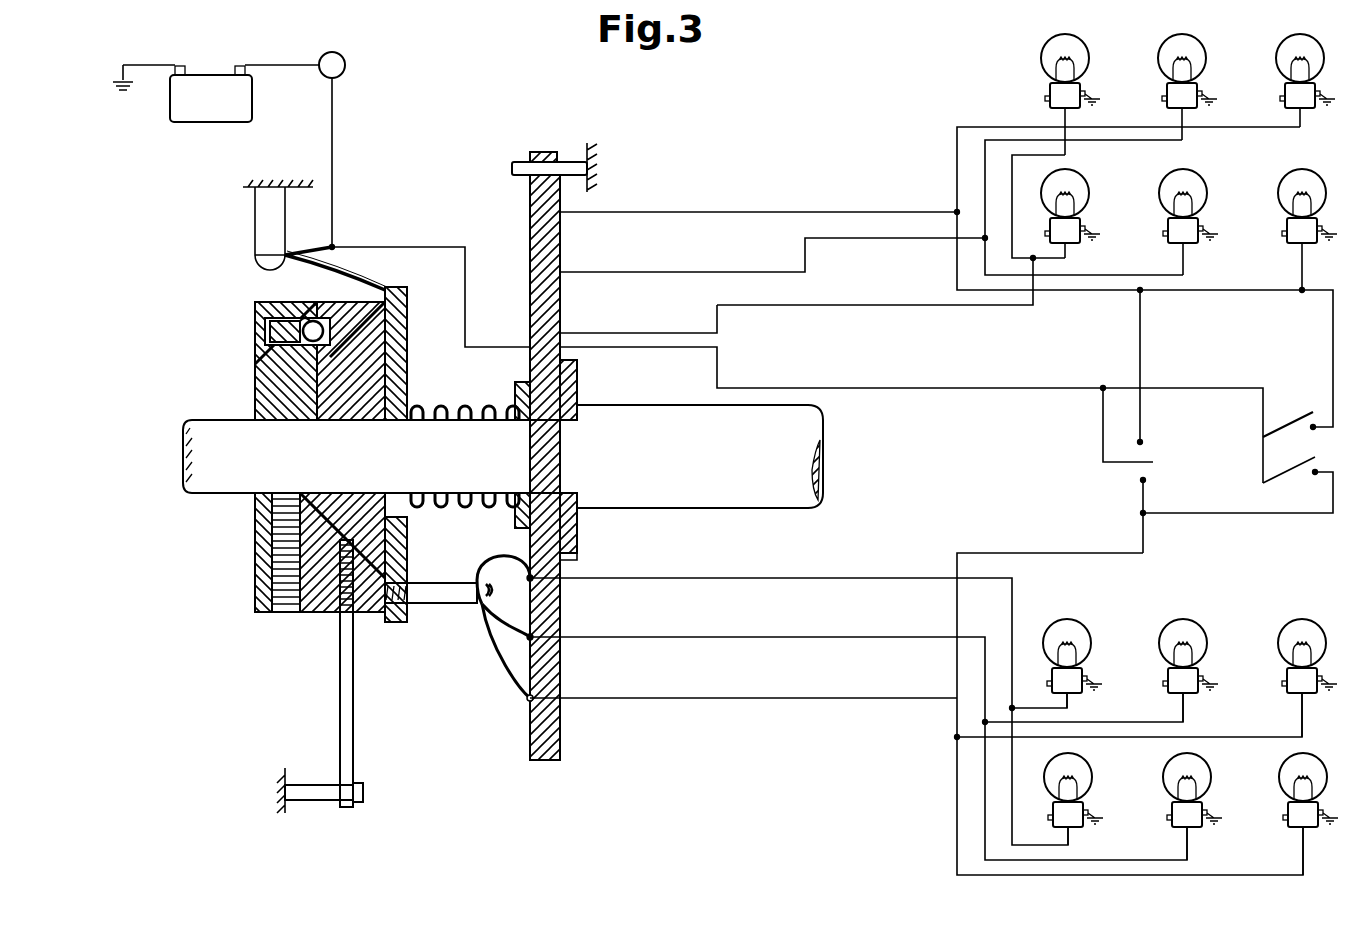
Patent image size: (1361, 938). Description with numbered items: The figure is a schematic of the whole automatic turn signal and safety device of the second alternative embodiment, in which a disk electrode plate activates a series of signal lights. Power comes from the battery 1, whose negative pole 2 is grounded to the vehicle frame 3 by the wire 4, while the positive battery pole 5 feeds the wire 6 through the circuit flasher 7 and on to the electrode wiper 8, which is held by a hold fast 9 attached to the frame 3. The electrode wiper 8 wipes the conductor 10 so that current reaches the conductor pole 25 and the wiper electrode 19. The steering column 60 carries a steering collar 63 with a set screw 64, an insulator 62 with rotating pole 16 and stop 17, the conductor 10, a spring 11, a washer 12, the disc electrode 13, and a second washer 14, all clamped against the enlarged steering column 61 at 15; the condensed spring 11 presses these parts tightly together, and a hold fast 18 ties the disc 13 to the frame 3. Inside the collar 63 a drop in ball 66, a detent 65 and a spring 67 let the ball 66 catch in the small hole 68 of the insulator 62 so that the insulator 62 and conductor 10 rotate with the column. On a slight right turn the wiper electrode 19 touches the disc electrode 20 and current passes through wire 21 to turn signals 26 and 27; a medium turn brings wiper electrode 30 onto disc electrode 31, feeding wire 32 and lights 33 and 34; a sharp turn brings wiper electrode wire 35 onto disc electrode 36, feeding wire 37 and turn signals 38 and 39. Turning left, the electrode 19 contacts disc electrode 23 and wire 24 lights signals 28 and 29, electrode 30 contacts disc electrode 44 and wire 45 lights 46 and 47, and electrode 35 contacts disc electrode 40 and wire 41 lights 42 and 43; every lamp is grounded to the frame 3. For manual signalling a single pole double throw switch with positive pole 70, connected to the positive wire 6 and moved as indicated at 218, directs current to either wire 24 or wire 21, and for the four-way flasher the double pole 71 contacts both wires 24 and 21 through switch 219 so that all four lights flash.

The battery 1 is at (216, 116).
The negative pole 2 is at (180, 66).
The vehicle frame 3 is at (118, 80).
The wire 4 is at (123, 65).
The positive battery pole 5 is at (236, 66).
The wire 6 is at (282, 65).
The circuit flasher 7 is at (320, 62).
The electrode wiper 8 is at (340, 280).
The hold fast 9 is at (255, 240).
The conductor 10 is at (407, 322).
The spring 11 is at (445, 410).
The washer 12 is at (515, 388).
The disc electrode 13 is at (572, 560).
The second washer 14 is at (570, 518).
The enlarged steering column location 15 is at (577, 450).
The rotating pole 16 is at (340, 662).
The stop 17 is at (320, 800).
The hold fast 18 is at (515, 162).
The wiper electrode 19 is at (500, 660).
The disc electrode 20 is at (528, 700).
The wire 21 is at (890, 698).
The disc electrode 23 is at (530, 220).
The wire 24 is at (957, 170).
The conductor pole 25 is at (430, 585).
The turn signal 26 is at (1290, 622).
The turn signal 27 is at (1290, 758).
The left turn light 28 is at (1282, 45).
The left turn light 29 is at (1286, 180).
The wiper electrode 30 is at (490, 640).
The disc electrode 31 is at (507, 630).
The wire 32 is at (875, 637).
The signal light 33 is at (1170, 622).
The signal light 34 is at (1172, 758).
The wiper electrode wire 35 is at (495, 556).
The disc electrode 36 is at (508, 598).
The wire 37 is at (905, 580).
The turn signal 38 is at (1052, 625).
The turn signal 39 is at (1060, 757).
The disc electrode 40 is at (530, 330).
The wire 41 is at (878, 305).
The light 42 is at (1049, 180).
The light 43 is at (1047, 45).
The disc electrode 44 is at (530, 268).
The wire 45 is at (880, 240).
The light 46 is at (1167, 180).
The light 47 is at (1164, 45).
The steering column 60 is at (385, 468).
The enlarged steering column 61 is at (694, 463).
The insulator 62 is at (390, 355).
The steering collar 63 is at (272, 392).
The set screw 64 is at (272, 537).
The detent 65 is at (275, 345).
The drop in ball 66 is at (305, 318).
The spring 67 is at (270, 327).
The hole 68 is at (323, 322).
The positive pole 70 is at (1103, 430).
The double pole 71 is at (1263, 462).
The switch blade 218 is at (1119, 480).
The switch 219 is at (1294, 408).